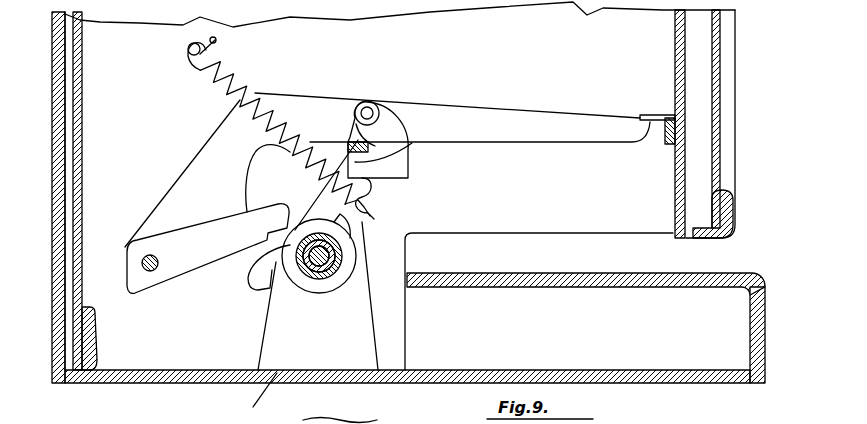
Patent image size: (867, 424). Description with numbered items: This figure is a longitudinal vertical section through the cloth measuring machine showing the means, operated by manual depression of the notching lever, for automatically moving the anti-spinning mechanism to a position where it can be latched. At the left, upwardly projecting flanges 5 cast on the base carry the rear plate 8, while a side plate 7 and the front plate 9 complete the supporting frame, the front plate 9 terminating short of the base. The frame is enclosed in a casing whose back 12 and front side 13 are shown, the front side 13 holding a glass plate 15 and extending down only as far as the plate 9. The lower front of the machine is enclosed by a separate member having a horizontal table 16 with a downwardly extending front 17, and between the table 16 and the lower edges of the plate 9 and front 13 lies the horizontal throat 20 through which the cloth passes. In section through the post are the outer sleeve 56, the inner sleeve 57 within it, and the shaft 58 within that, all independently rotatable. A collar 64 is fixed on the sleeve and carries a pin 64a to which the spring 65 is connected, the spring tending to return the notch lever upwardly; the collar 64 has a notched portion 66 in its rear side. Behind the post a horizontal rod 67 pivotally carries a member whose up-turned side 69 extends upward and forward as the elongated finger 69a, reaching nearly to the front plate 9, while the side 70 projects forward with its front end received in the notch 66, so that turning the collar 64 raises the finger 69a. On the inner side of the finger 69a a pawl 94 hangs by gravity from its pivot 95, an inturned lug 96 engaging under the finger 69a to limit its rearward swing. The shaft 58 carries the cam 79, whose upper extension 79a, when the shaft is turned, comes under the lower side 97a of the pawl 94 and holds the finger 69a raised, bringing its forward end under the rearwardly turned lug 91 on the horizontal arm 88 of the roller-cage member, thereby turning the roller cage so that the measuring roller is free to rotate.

The upwardly projecting ribs or flanges 5 is at (96, 328).
The side plate 7 is at (462, 30).
The rear plate 8 is at (83, 203).
The front plate 9 is at (680, 38).
The back of casing 12 is at (50, 220).
The front side of casing 13 is at (734, 212).
The glass plate 15 is at (722, 86).
The horizontal top or table 16 is at (640, 284).
The front of lower casing member 17 is at (750, 323).
The throat 20 is at (717, 258).
The outer sleeve 56 is at (342, 266).
The inner sleeve 57 is at (326, 280).
The shaft 58 is at (316, 262).
The collar 64 is at (355, 250).
The pin 64a is at (406, 236).
The spring 65 is at (233, 78).
The recessed or notched portion 66 is at (303, 222).
The rod 67 is at (150, 272).
The up-turned side 69 is at (190, 176).
The elongated finger 69a is at (511, 133).
The up-turned side (plate) 70 is at (215, 256).
The cam member 79 is at (268, 272).
The upper extension of cam 79a is at (374, 201).
The horizontal arm 88 is at (666, 142).
The lug 91 is at (652, 115).
The pawl 94 is at (393, 125).
The pivot 95 is at (371, 107).
The inturned lug 96 is at (345, 130).
The lower side of pawl 97a is at (412, 143).